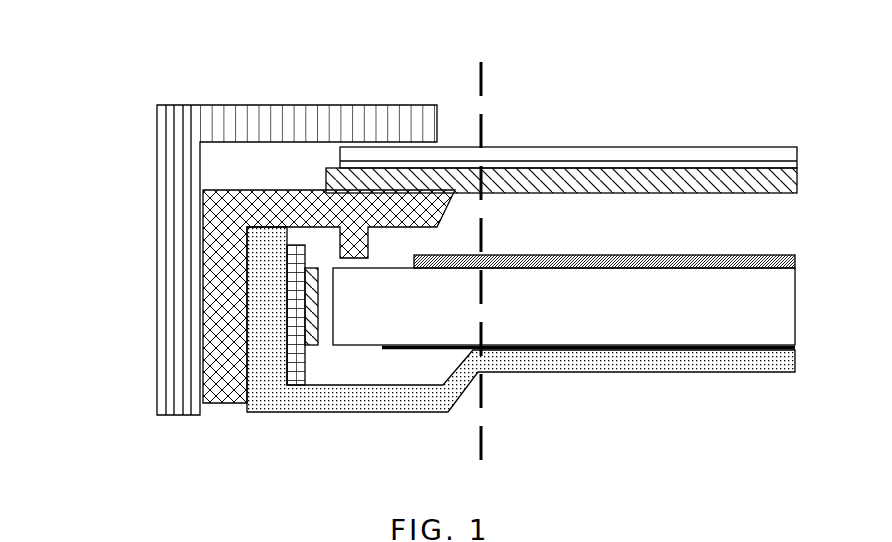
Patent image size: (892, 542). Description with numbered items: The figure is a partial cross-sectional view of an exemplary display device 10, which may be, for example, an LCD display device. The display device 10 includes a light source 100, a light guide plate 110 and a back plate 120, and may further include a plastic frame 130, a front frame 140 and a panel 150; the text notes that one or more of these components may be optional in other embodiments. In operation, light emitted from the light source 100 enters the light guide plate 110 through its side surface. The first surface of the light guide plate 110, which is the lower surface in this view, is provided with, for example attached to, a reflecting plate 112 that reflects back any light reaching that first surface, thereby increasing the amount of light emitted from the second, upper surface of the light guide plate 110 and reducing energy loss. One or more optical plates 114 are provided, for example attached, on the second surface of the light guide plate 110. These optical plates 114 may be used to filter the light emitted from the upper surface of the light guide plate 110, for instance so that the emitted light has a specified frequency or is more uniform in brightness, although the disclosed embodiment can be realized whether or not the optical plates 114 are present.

The display device 10 is at (507, 43).
The light source 100 is at (300, 350).
The light guide plate 110 is at (760, 323).
The reflecting plate 112 is at (795, 352).
The optical plates 114 is at (795, 262).
The back plate 120 is at (262, 385).
The plastic frame 130 is at (220, 305).
The front frame 140 is at (183, 240).
The panel 150 is at (778, 152).